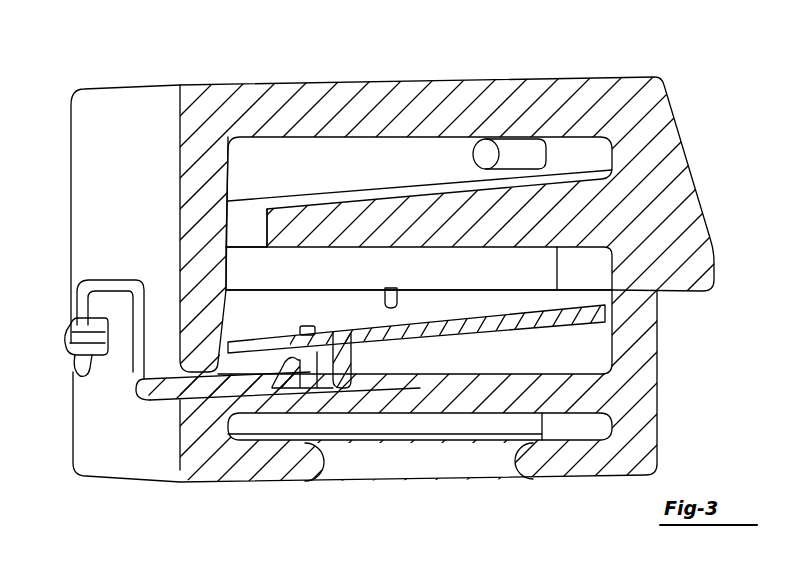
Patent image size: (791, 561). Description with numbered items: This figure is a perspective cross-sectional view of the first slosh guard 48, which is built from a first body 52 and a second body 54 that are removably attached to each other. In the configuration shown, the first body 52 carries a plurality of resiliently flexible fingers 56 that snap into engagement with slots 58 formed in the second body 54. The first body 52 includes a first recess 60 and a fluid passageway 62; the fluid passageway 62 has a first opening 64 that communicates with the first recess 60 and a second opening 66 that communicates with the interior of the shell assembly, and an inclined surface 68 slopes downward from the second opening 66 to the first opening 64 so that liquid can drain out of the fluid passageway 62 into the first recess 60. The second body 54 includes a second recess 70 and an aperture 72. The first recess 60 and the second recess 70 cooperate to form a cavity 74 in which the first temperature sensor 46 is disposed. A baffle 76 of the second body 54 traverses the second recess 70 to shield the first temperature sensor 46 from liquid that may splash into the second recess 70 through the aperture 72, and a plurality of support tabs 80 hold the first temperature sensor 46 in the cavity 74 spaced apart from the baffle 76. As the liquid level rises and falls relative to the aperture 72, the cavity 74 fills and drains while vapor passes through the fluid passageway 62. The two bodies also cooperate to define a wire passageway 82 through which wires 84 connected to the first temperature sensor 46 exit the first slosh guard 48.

The first temperature sensor 46 is at (465, 340).
The first slosh guard 48 is at (655, 45).
The first body 52 is at (683, 160).
The second body 54 is at (657, 408).
The resiliently flexible fingers 56 is at (80, 333).
The slots 58 is at (76, 362).
The first recess 60 is at (592, 267).
The fluid passageway 62 is at (318, 172).
The first opening 64 is at (247, 232).
The second opening 66 is at (495, 152).
The inclined surface 68 is at (383, 182).
The second recess 70 is at (593, 325).
The aperture 72 is at (345, 468).
The cavity 74 is at (557, 247).
The baffle 76 is at (410, 403).
The support tabs 80 is at (386, 298).
The wire passageway 82 is at (130, 386).
The wires 84 is at (155, 400).